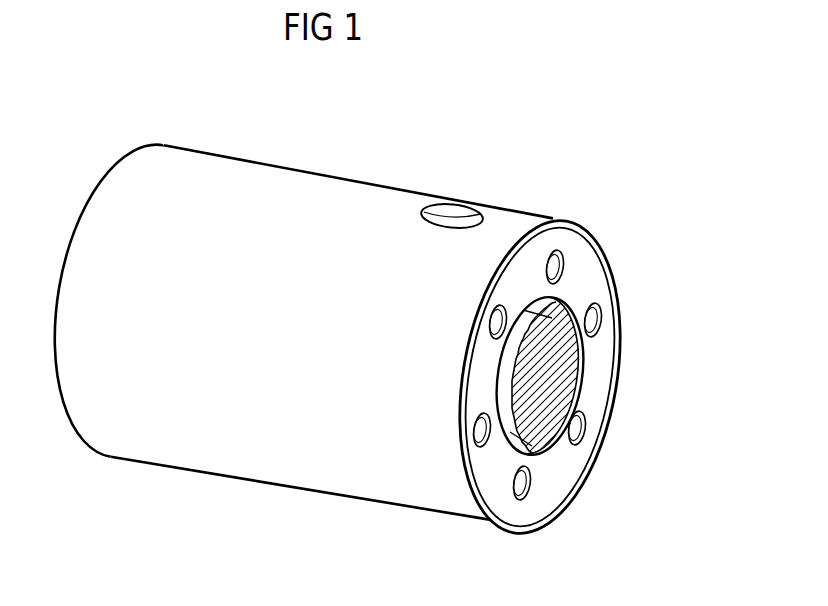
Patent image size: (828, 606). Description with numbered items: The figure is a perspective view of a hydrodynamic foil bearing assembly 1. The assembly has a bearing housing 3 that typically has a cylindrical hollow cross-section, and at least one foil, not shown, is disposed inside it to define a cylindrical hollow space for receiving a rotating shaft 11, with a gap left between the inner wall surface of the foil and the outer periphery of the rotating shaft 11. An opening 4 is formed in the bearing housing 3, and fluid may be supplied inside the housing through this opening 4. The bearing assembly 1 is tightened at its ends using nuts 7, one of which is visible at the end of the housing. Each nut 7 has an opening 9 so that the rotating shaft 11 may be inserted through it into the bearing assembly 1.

The hydrodynamic foil bearing assembly 1 is at (183, 114).
The bearing housing 3 is at (278, 432).
The opening 4 is at (453, 217).
The nut 7 is at (613, 288).
The opening 9 is at (580, 393).
The rotating shaft 11 is at (550, 434).